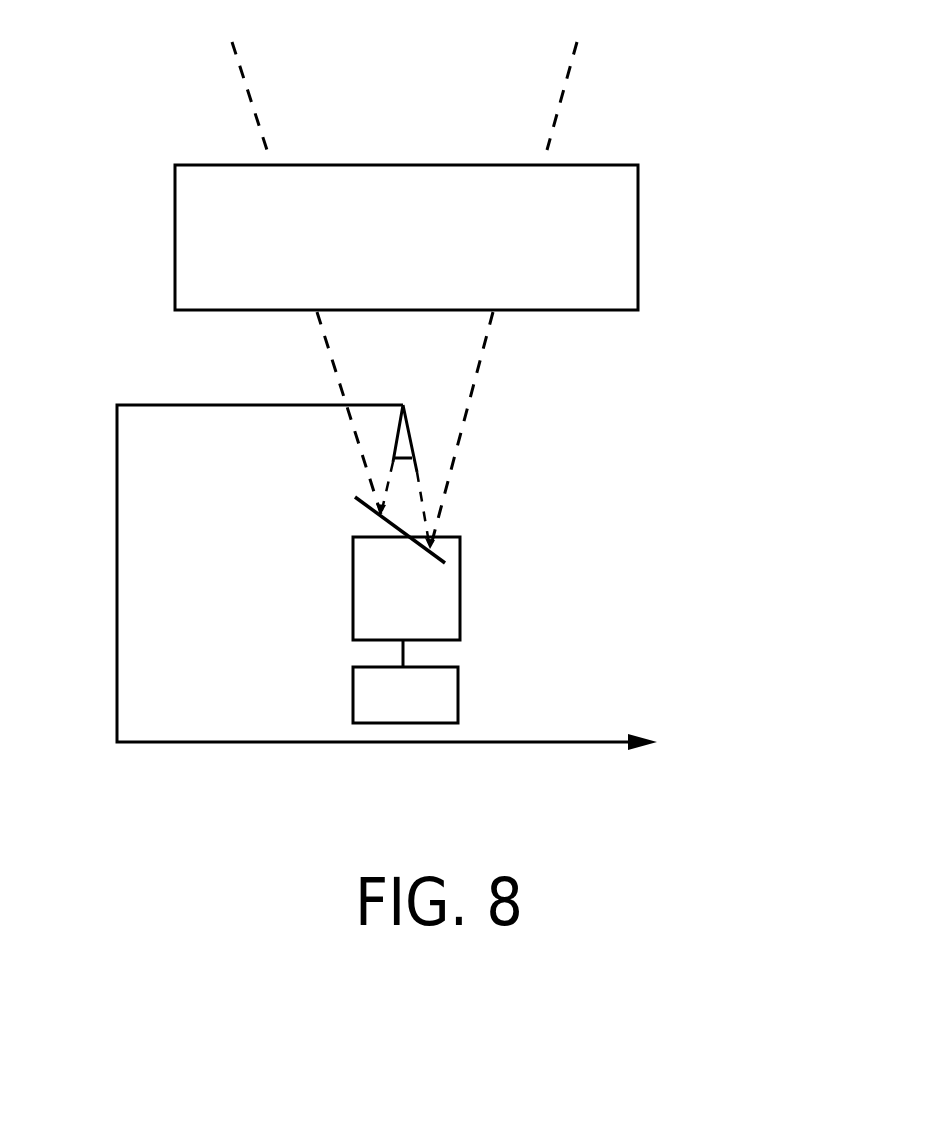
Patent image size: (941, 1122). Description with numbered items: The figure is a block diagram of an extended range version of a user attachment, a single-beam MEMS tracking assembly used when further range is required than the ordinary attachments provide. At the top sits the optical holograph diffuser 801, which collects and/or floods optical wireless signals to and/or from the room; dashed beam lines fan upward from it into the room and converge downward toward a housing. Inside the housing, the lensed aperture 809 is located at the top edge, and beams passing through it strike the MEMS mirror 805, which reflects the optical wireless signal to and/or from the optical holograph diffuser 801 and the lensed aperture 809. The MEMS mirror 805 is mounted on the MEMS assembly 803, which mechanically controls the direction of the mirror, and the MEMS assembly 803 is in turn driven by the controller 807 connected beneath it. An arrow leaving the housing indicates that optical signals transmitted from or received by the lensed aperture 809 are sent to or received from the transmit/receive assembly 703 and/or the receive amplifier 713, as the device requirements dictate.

The optical holograph diffuser 801 is at (400, 257).
The MEMS assembly 803 is at (460, 575).
The MEMS mirror 805 is at (357, 497).
The controller 807 is at (427, 712).
The lensed aperture 809 is at (407, 423).
The transmit/receive assembly 703 is at (800, 723).
The receive amplifier 713 is at (726, 775).